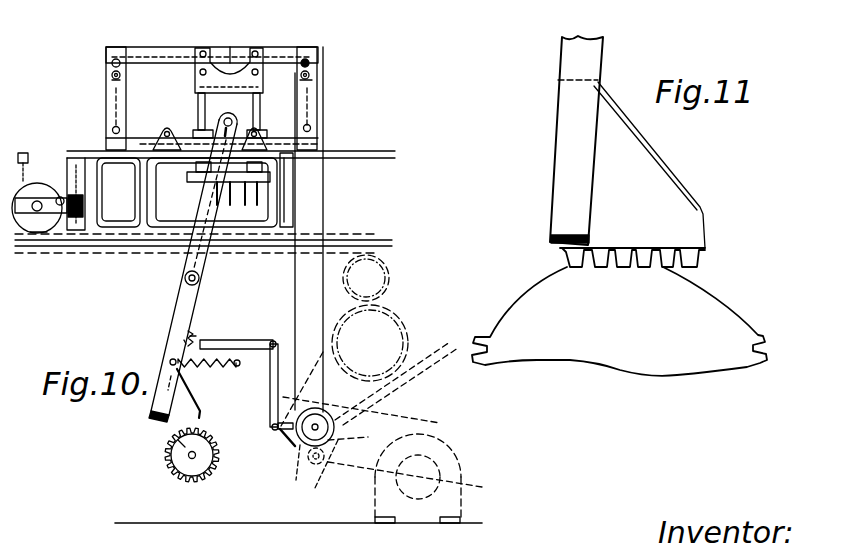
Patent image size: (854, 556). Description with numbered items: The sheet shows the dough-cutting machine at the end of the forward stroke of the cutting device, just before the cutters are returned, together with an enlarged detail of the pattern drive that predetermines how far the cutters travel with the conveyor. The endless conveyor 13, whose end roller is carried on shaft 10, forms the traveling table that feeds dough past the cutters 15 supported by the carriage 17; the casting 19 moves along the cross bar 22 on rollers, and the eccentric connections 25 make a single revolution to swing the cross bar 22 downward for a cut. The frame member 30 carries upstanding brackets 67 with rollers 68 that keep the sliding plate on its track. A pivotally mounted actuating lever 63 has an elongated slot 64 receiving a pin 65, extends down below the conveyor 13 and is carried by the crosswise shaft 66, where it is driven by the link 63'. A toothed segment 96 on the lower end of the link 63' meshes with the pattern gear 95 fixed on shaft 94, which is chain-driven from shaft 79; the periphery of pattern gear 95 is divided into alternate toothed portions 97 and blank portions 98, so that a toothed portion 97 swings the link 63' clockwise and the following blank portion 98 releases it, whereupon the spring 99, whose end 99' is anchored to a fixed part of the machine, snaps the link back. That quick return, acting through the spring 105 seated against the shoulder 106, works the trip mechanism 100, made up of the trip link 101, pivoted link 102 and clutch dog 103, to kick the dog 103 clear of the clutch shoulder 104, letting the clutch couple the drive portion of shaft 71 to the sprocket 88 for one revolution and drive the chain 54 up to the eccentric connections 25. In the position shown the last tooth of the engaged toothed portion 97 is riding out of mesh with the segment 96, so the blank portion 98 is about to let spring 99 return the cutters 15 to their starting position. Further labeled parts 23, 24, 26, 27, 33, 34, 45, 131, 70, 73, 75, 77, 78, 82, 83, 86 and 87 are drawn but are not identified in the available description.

In FIG. 10, the cross bar 22 is at (153, 62).
In FIG. 10, the top rail 45 is at (278, 54).
In FIG. 10, the eccentric connections 25 is at (110, 60).
In FIG. 10, the bolt 23 is at (111, 73).
In FIG. 10, the pin 26 is at (114, 79).
In FIG. 10, the left post 34 is at (105, 121).
In FIG. 10, the bolt 24 is at (310, 74).
In FIG. 10, the pin 27 is at (311, 80).
In FIG. 10, the right post 33 is at (318, 104).
In FIG. 10, the casting 19 is at (196, 76).
In FIG. 10, the rollers 68 is at (167, 128).
In FIG. 10, the upstanding brackets 67 is at (158, 142).
In FIG. 10, the pin 65 is at (228, 116).
In FIG. 10, the elongated slot 64 is at (236, 124).
In FIG. 10, the actuating lever 63 is at (192, 267).
In FIG. 10, the shaft 66 is at (185, 281).
In FIG. 10, the link 63' is at (166, 369).
In FIG. 11, the link 63' is at (557, 140).
In FIG. 10, the spring 105 is at (194, 338).
In FIG. 10, the shoulder 106 is at (186, 341).
In FIG. 10, the trip link 101 is at (230, 340).
In FIG. 10, the trip mechanism 100 is at (262, 322).
In FIG. 10, the pivoted link 102 is at (268, 409).
In FIG. 10, the clutch dog 103 is at (277, 430).
In FIG. 10, the clutch shoulder 104 is at (286, 442).
In FIG. 10, the spring 99 is at (210, 376).
In FIG. 10, the spring end 99' is at (248, 368).
In FIG. 10, the toothed segment 96 is at (193, 399).
In FIG. 11, the toothed segment 96 is at (660, 192).
In FIG. 10, the pattern gear 95 is at (166, 451).
In FIG. 11, the pattern gear 95 is at (628, 370).
In FIG. 10, the shaft 94 is at (190, 458).
In FIG. 10, the toothed portions 97 is at (170, 462).
In FIG. 11, the toothed portions 97 is at (638, 268).
In FIG. 10, the blank portions 98 is at (218, 447).
In FIG. 11, the blank portions 98 is at (530, 298).
In FIG. 10, the frame member 30 is at (285, 197).
In FIG. 10, the shaft 10 is at (315, 427).
In FIG. 10, the carriage 17 is at (187, 176).
In FIG. 10, the cutters 15 is at (216, 196).
In FIG. 10, the control device 131 is at (52, 176).
In FIG. 10, the chain 54 is at (294, 273).
In FIG. 10, the drum 87 is at (366, 278).
In FIG. 10, the endless conveyor 13 is at (390, 280).
In FIG. 10, the drum 86 is at (370, 343).
In FIG. 10, the link 83 is at (396, 388).
In FIG. 10, the shaft 71 is at (388, 402).
In FIG. 10, the link 77 is at (366, 389).
In FIG. 10, the link 78 is at (357, 431).
In FIG. 10, the housing 75 is at (455, 441).
In FIG. 10, the shaft 73 is at (378, 477).
In FIG. 10, the base 70 is at (380, 497).
In FIG. 10, the roller 82 is at (309, 464).
In FIG. 10, the shaft 79 is at (322, 466).
In FIG. 10, the sprocket 88 is at (296, 456).